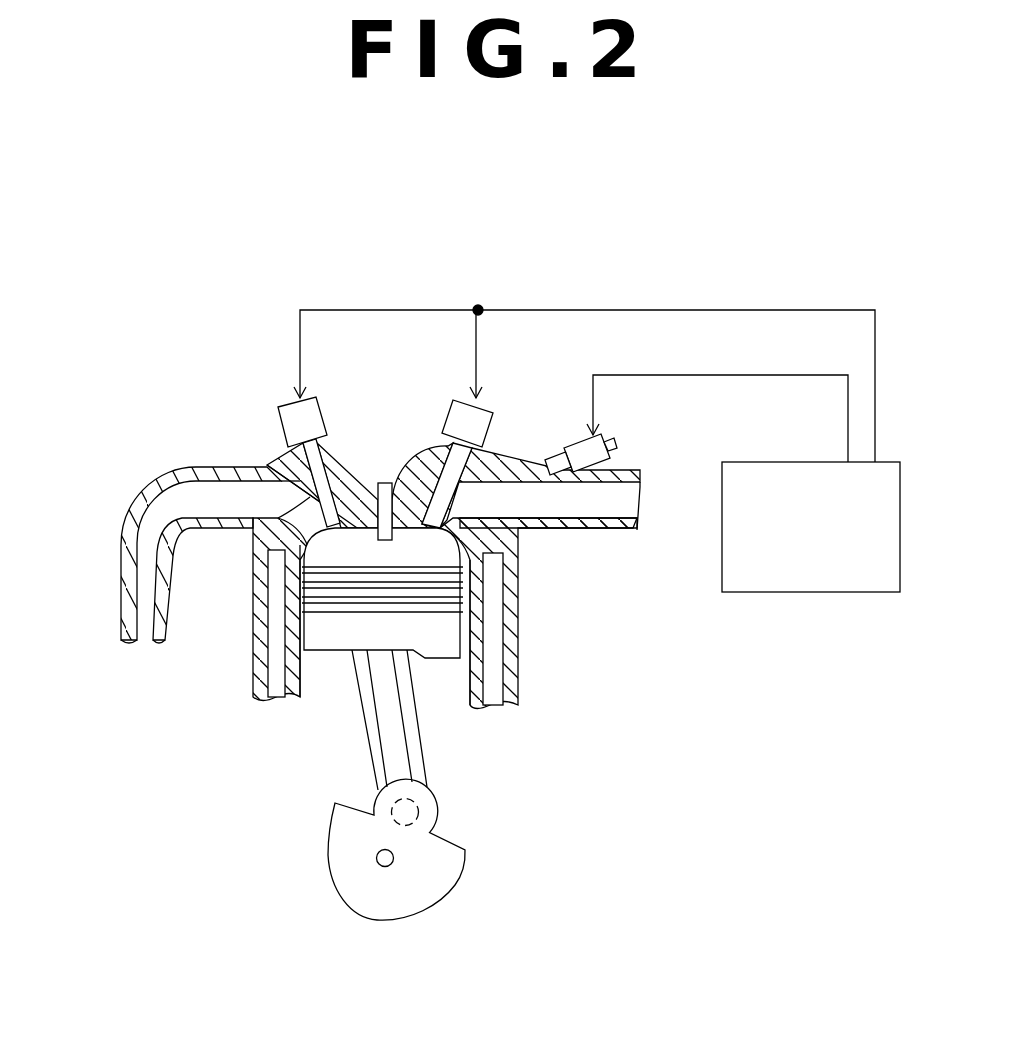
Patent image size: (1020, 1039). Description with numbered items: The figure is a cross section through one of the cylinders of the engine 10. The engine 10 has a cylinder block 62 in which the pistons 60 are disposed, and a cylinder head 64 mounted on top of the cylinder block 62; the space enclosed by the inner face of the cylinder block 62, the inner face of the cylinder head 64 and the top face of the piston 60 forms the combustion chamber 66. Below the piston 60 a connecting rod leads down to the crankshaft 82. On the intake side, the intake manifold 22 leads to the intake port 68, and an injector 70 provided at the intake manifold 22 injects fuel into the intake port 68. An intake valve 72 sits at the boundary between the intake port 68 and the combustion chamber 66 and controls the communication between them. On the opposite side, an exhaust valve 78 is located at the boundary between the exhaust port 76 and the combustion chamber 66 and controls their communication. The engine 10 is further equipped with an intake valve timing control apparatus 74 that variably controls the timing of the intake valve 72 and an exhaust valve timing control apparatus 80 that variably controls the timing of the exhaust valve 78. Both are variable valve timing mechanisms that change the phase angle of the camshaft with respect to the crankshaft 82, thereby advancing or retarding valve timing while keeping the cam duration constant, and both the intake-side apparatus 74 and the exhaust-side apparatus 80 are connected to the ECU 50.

The engine 10 is at (137, 673).
The intake manifold 22 is at (620, 477).
The ECU 50 is at (770, 577).
The piston 60 is at (340, 653).
The cylinder block 62 is at (257, 688).
The cylinder head 64 is at (347, 452).
The combustion chamber 66 is at (430, 557).
The intake port 68 is at (513, 500).
The injector 70 is at (577, 437).
The intake valve 72 is at (428, 448).
The intake valve timing control apparatus 74 is at (493, 397).
The exhaust port 76 is at (253, 520).
The exhaust valve 78 is at (267, 463).
The exhaust valve timing control apparatus 80 is at (276, 448).
The crankshaft 82 is at (373, 858).